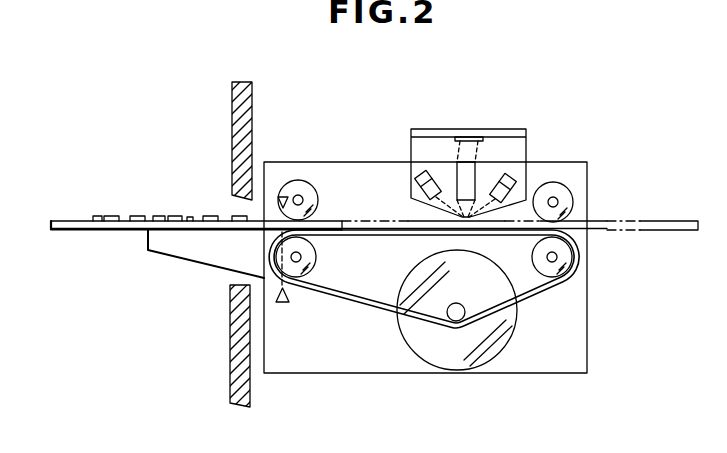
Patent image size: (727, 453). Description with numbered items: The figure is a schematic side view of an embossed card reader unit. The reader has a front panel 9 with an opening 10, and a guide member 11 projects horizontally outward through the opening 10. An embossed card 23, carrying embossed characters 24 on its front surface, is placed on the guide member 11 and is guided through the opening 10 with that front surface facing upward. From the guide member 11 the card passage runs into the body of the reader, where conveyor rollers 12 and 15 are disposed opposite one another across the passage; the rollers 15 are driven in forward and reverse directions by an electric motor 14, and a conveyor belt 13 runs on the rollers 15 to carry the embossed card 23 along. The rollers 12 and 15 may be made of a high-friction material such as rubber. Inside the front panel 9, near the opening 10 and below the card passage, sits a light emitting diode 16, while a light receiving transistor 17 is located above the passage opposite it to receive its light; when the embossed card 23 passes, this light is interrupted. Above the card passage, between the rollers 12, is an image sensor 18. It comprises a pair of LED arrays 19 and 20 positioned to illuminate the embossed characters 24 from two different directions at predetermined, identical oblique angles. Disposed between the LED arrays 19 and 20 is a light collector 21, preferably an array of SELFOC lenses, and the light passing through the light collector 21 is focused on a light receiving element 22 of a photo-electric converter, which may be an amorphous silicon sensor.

The front panel 9 is at (232, 101).
The opening 10 is at (232, 209).
The guide member 11 is at (198, 258).
The conveyor rollers 12 is at (300, 183).
The conveyor belt 13 is at (565, 287).
The electric motor 14 is at (455, 360).
The conveyor rollers 15 is at (318, 262).
The light emitting diode 16 is at (284, 305).
The light receiving transistor 17 is at (284, 196).
The image sensor 18 is at (497, 143).
The LED array 19 is at (510, 179).
The LED array 20 is at (424, 173).
The light collector 21 is at (478, 176).
The light receiving element 22 is at (461, 137).
The embossed card 23 is at (102, 232).
The embossed characters 24 is at (98, 215).